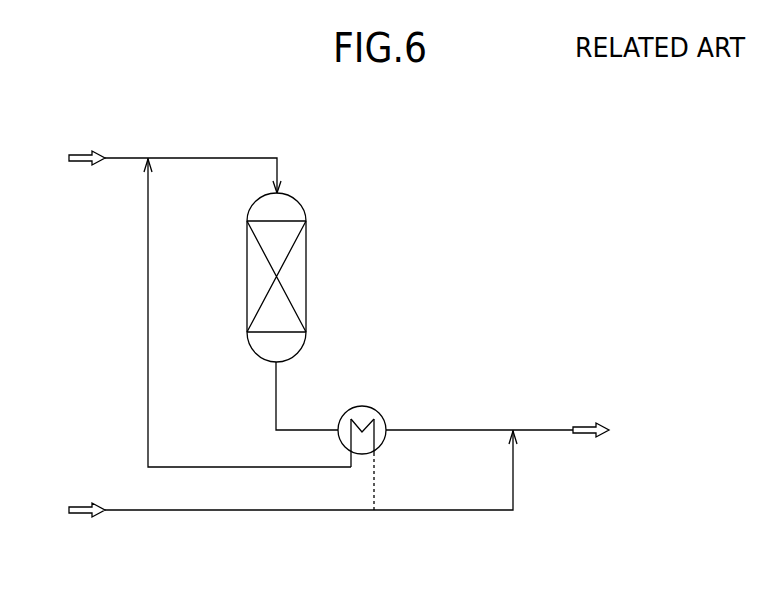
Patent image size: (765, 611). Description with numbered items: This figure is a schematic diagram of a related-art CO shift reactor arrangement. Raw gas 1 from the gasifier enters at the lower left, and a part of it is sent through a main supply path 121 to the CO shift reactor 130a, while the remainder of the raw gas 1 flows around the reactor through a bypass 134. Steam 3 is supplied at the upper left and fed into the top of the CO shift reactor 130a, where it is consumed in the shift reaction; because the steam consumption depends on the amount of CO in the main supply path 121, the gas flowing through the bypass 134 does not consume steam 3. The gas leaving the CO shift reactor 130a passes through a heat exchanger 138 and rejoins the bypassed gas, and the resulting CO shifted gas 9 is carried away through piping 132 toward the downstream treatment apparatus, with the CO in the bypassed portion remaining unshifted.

The steam 3 is at (87, 181).
The raw gas 1 is at (87, 532).
The CO shifted gas 9 is at (604, 431).
The main supply path 121 is at (148, 360).
The CO shift reactor 130a is at (306, 284).
The heat exchanger 138 is at (379, 446).
The piping 132 is at (556, 430).
The bypass 134 is at (450, 512).